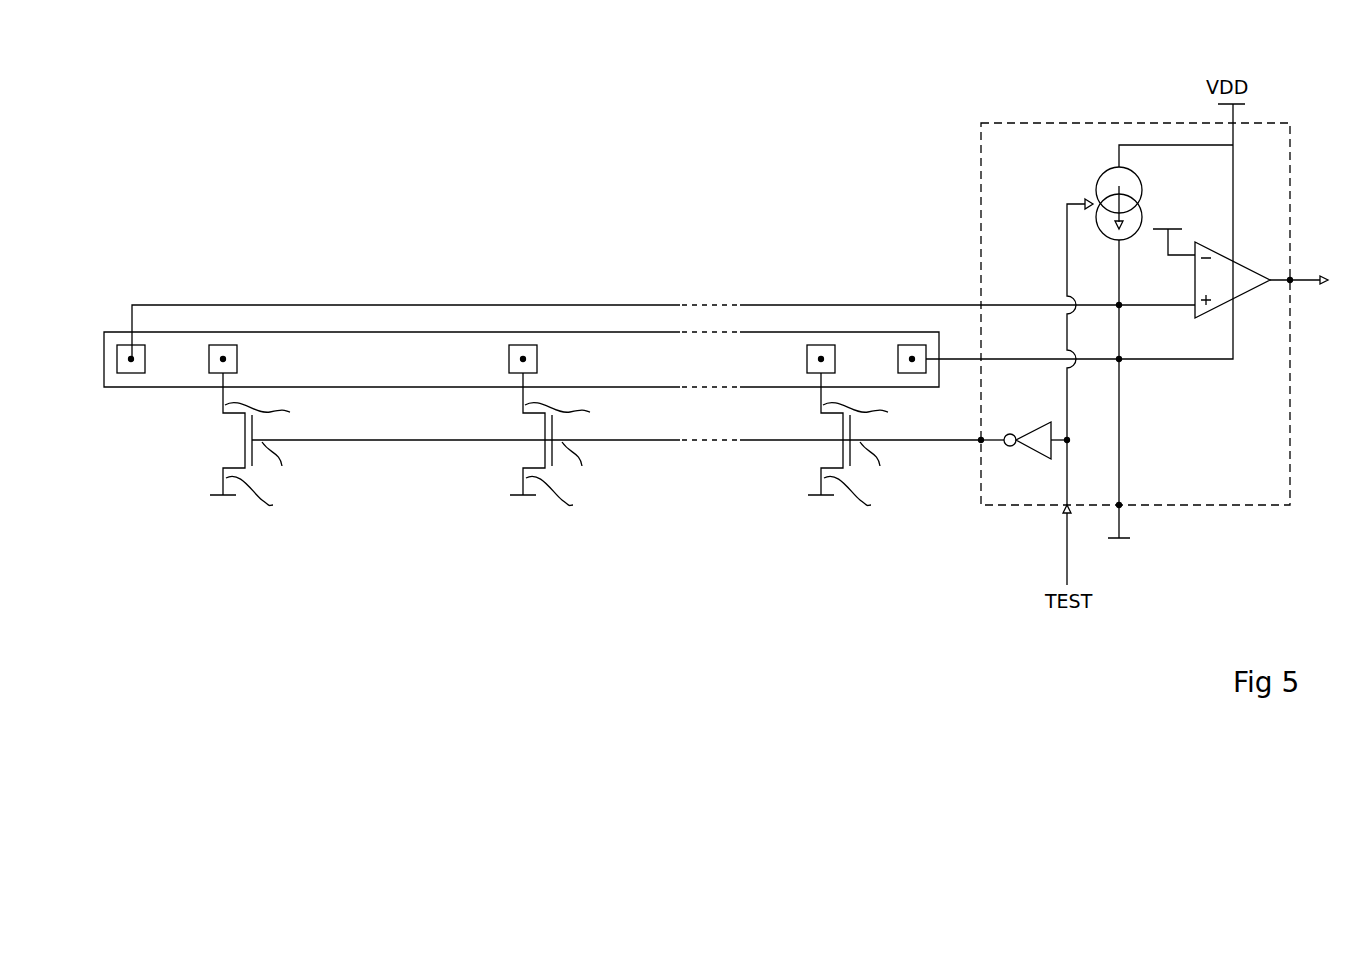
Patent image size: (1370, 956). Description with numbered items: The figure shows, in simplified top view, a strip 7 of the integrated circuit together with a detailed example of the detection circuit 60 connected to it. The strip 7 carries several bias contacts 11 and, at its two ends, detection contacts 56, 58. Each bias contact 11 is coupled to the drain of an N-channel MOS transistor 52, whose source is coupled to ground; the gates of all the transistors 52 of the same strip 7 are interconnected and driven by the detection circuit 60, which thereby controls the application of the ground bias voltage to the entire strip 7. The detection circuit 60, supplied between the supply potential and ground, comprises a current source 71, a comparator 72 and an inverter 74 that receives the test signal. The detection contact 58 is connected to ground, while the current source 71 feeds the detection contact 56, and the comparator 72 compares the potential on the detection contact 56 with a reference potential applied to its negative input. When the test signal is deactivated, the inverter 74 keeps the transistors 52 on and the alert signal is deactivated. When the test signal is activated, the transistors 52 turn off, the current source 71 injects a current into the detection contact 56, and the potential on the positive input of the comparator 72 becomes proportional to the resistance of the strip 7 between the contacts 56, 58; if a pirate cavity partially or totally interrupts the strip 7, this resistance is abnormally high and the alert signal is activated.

The strip 7 is at (178, 378).
The bias contact 11 is at (218, 345).
The N-channel MOS transistor 52 is at (245, 437).
The detection contact 56 is at (131, 375).
The detection contact 58 is at (916, 375).
The detection circuit 60 is at (1022, 123).
The current source 71 is at (1098, 175).
The comparator 72 is at (1250, 285).
The inverter 74 is at (1028, 450).